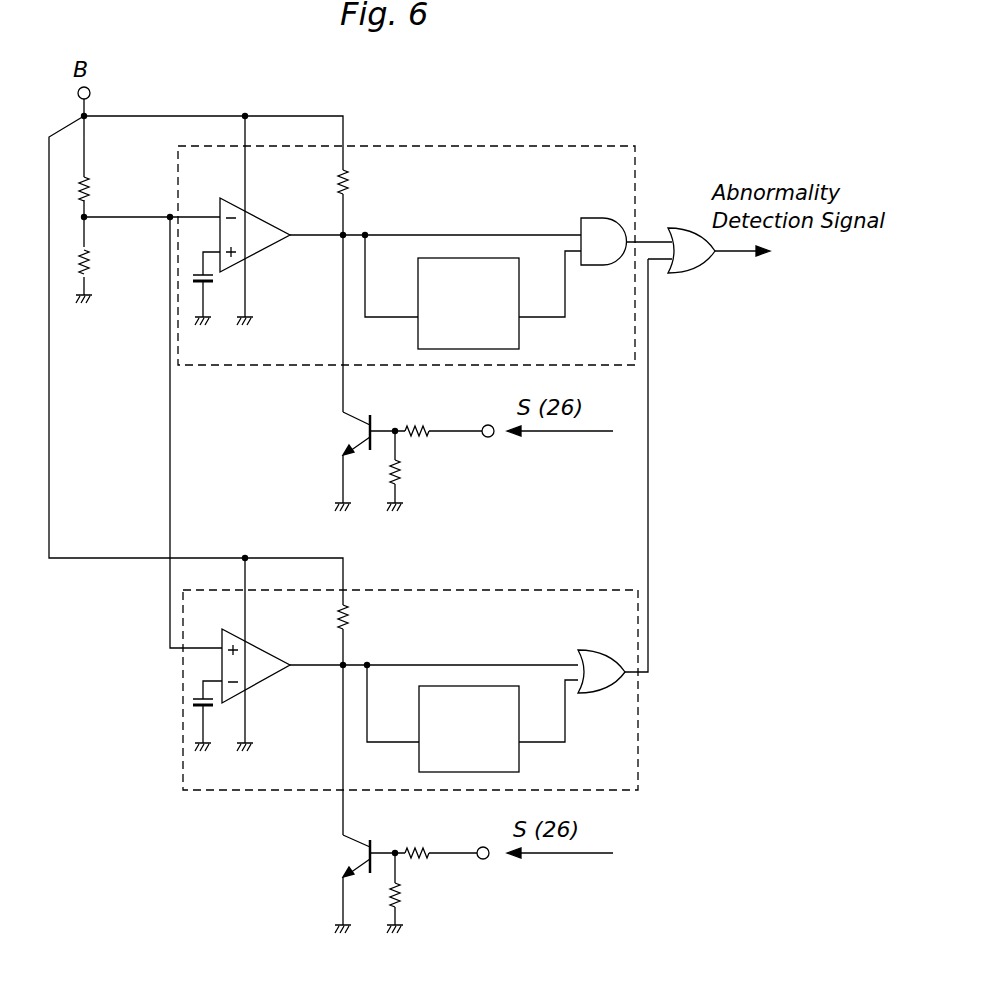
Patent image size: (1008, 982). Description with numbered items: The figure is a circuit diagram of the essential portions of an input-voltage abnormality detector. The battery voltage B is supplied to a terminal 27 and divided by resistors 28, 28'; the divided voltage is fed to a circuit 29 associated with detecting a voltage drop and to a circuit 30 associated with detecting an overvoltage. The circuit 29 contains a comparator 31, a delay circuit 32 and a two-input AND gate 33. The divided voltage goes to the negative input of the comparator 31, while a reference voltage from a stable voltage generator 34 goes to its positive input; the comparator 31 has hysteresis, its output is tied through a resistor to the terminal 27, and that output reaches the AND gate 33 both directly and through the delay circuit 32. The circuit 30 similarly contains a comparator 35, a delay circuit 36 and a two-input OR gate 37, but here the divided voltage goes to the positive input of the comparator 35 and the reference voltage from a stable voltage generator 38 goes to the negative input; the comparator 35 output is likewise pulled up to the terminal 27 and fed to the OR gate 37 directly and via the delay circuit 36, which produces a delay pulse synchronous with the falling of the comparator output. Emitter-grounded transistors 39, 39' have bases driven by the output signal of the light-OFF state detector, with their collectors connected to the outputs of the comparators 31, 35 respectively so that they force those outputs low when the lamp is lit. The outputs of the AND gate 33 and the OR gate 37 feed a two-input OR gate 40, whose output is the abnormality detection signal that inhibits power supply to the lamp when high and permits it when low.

The terminal 27 is at (88, 87).
The resistor 28 is at (109, 167).
The resistor 28' is at (123, 252).
The circuit 29 is at (385, 146).
The circuit 30 is at (458, 590).
The comparator 31 is at (267, 220).
The delay circuit 32 is at (437, 258).
The 2-input AND gate 33 is at (593, 218).
The stable voltage generator 34 is at (193, 273).
The comparator 35 is at (265, 648).
The delay circuit 36 is at (438, 686).
The 2-input OR gate 37 is at (595, 650).
The stable voltage generator 38 is at (195, 699).
The emitter-grounded transistor 39 is at (394, 461).
The emitter-grounded transistor 39' is at (391, 884).
The 2-input OR gate 40 is at (698, 268).